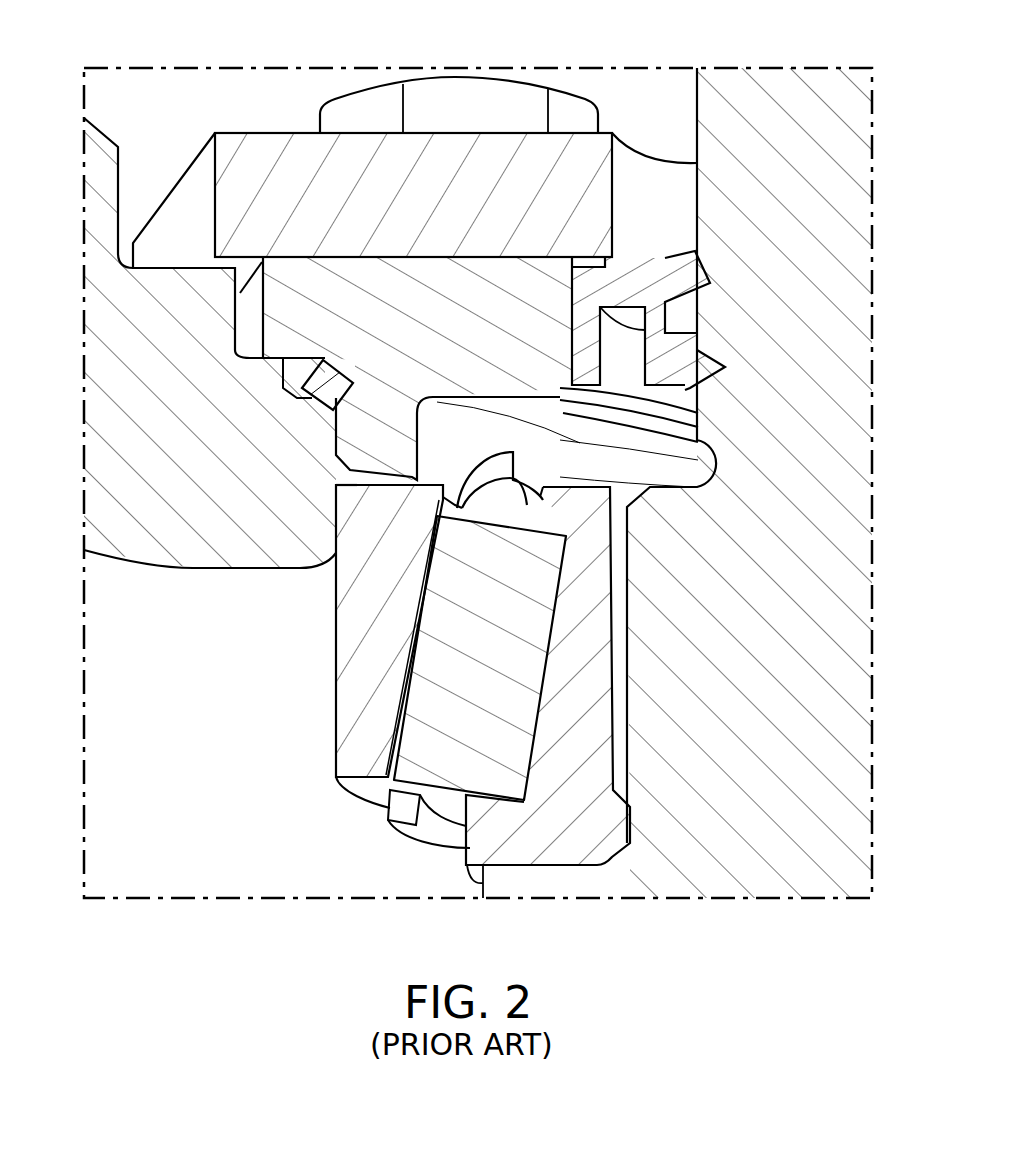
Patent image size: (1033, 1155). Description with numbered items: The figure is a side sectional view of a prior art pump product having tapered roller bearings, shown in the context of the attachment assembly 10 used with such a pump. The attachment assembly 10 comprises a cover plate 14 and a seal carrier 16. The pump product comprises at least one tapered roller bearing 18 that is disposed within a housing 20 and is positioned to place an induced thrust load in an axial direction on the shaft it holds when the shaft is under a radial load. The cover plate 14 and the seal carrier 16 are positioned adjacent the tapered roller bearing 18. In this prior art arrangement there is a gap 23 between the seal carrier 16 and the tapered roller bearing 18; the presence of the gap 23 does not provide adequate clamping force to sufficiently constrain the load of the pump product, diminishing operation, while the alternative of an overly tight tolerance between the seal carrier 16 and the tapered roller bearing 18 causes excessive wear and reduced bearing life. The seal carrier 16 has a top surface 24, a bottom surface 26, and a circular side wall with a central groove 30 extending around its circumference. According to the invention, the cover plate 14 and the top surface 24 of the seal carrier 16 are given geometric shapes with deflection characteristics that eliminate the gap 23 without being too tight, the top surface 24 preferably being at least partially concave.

The attachment assembly 10 is at (206, 114).
The cover plate 14 is at (358, 150).
The seal carrier 16 is at (302, 283).
The tapered roller bearing 18 is at (436, 675).
The housing 20 is at (120, 312).
The gap 23 is at (357, 483).
The top surface 24 is at (450, 257).
The bottom surface 26 is at (383, 483).
The central groove 30 is at (340, 364).